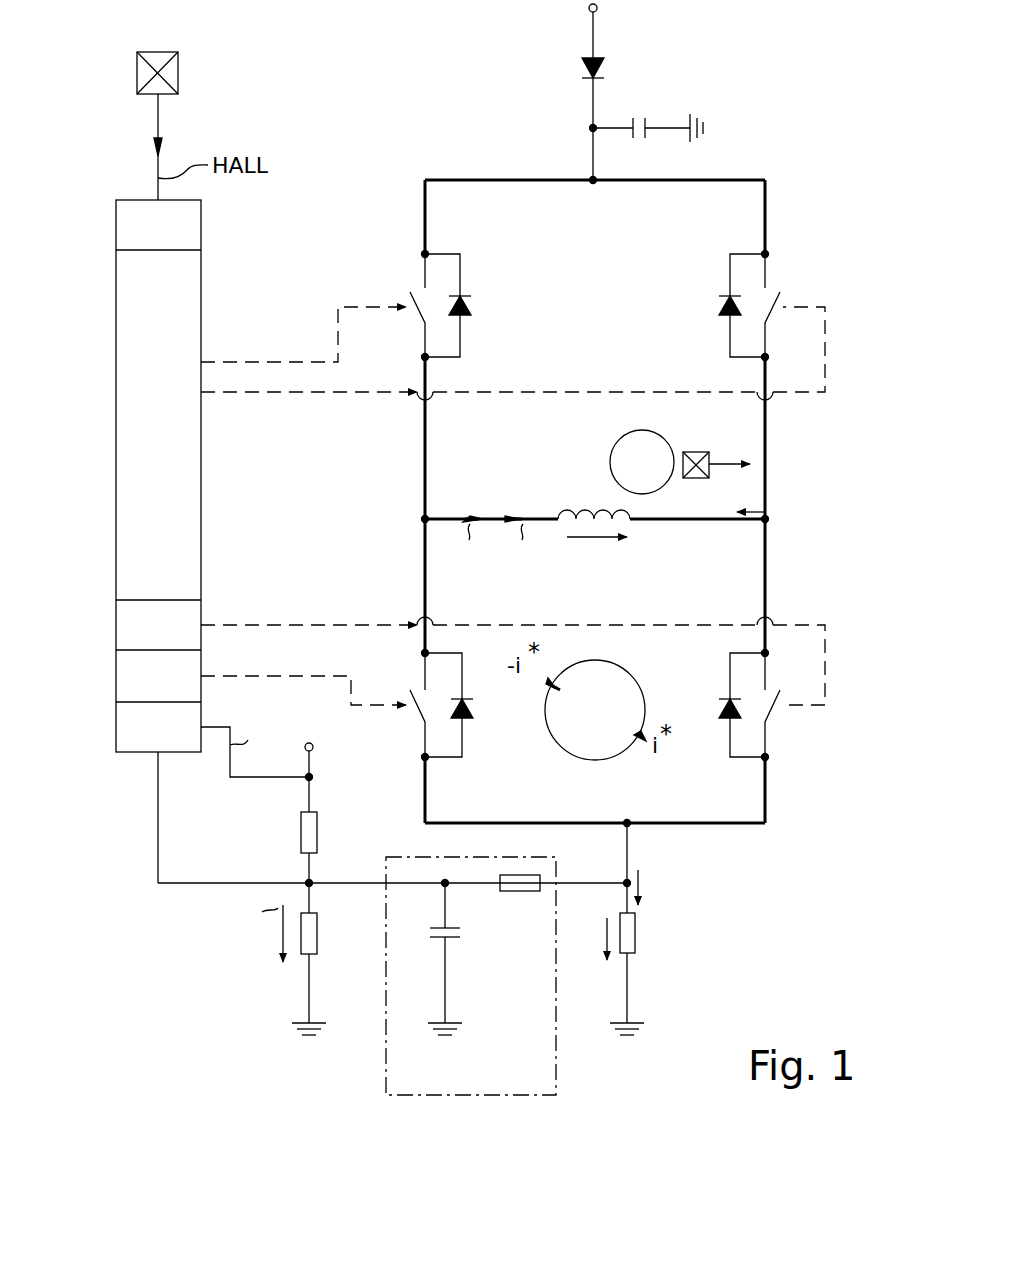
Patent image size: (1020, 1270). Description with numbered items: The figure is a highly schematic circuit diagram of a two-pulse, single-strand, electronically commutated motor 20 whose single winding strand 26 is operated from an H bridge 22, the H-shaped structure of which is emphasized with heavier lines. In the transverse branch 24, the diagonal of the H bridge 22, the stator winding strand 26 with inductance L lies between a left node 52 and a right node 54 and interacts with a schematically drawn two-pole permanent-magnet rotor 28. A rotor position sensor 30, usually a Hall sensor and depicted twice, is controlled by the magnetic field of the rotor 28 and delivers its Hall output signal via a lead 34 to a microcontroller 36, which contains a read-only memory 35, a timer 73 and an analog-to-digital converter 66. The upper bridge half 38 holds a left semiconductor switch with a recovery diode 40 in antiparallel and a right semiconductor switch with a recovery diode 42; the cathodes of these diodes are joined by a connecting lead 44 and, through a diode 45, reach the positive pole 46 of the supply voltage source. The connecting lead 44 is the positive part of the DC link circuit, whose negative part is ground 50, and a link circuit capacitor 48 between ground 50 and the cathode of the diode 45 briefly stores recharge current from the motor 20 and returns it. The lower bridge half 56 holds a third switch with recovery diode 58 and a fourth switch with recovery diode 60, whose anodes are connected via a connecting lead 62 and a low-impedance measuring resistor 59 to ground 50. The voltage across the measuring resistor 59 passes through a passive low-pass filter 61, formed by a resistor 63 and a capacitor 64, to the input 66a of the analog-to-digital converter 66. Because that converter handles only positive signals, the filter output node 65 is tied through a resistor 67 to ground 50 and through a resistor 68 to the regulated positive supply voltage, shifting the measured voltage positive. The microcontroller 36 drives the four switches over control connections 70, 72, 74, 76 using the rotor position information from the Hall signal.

The electronically commutated motor 20 is at (595, 468).
The H bridge 22 is at (750, 170).
The transverse branch 24 is at (765, 512).
The winding strand 26 is at (570, 510).
The permanent-magnet rotor 28 is at (615, 444).
The rotor position sensor 30 is at (178, 72).
The lead 34 is at (158, 133).
The ROM 35 is at (116, 222).
The microcontroller 36 is at (158, 476).
The upper bridge half 38 is at (593, 258).
The recovery diode 40 is at (471, 303).
The recovery diode 42 is at (719, 308).
The connecting lead 44 is at (590, 128).
The diode 45 is at (582, 68).
The positive pole 46 is at (589, 8).
The link circuit capacitor 48 is at (657, 121).
The ground 50 is at (690, 118).
The node 52 is at (425, 519).
The node 54 is at (768, 522).
The lower bridge half 56 is at (594, 763).
The recovery diode 58 is at (473, 708).
The measuring resistor 59 is at (635, 940).
The recovery diode 60 is at (719, 712).
The low-pass filter 61 is at (556, 1095).
The connecting lead 62 is at (518, 823).
The resistor 63 is at (520, 891).
The capacitor 64 is at (440, 928).
The node 65 is at (309, 883).
The A/D converter 66 is at (116, 716).
The input of A/D converter 66a is at (158, 765).
The resistor 67 is at (317, 938).
The resistor 68 is at (317, 830).
The control connection 70 is at (338, 330).
The control connection 72 is at (603, 392).
The timer 73 is at (116, 625).
The control connection 74 is at (362, 676).
The control connection 76 is at (303, 625).